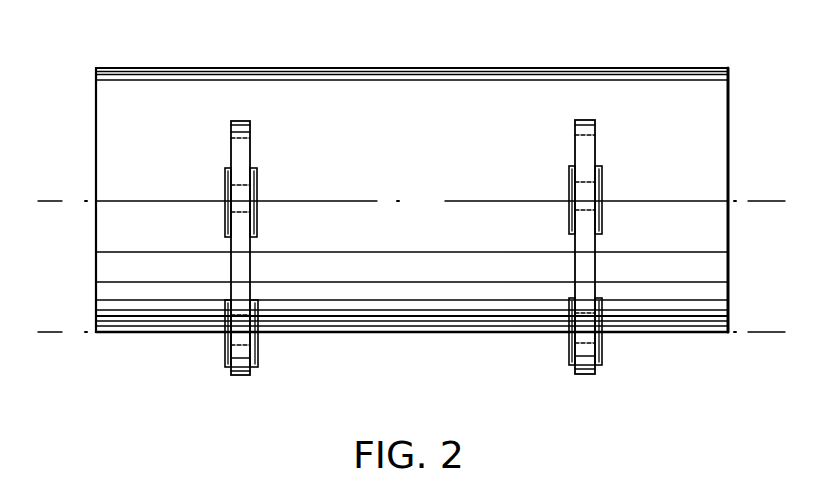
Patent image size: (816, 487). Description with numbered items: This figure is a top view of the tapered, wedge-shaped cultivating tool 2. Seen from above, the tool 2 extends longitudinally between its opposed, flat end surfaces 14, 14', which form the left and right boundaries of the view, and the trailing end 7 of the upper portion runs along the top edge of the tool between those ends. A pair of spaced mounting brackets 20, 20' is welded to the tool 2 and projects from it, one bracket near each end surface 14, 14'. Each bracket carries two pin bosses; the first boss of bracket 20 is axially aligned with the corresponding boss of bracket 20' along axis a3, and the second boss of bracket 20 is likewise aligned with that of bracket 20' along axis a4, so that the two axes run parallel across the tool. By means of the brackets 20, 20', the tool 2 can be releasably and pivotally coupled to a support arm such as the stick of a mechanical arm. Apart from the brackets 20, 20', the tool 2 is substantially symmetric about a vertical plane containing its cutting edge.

The cultivating tool 2 is at (415, 176).
The trailing end 7 is at (425, 97).
The end surface 14 is at (70, 200).
The end surface 14' is at (756, 200).
The mounting bracket 20 is at (254, 221).
The mounting bracket 20' is at (594, 220).
The axis a3 is at (60, 198).
The axis a4 is at (60, 329).